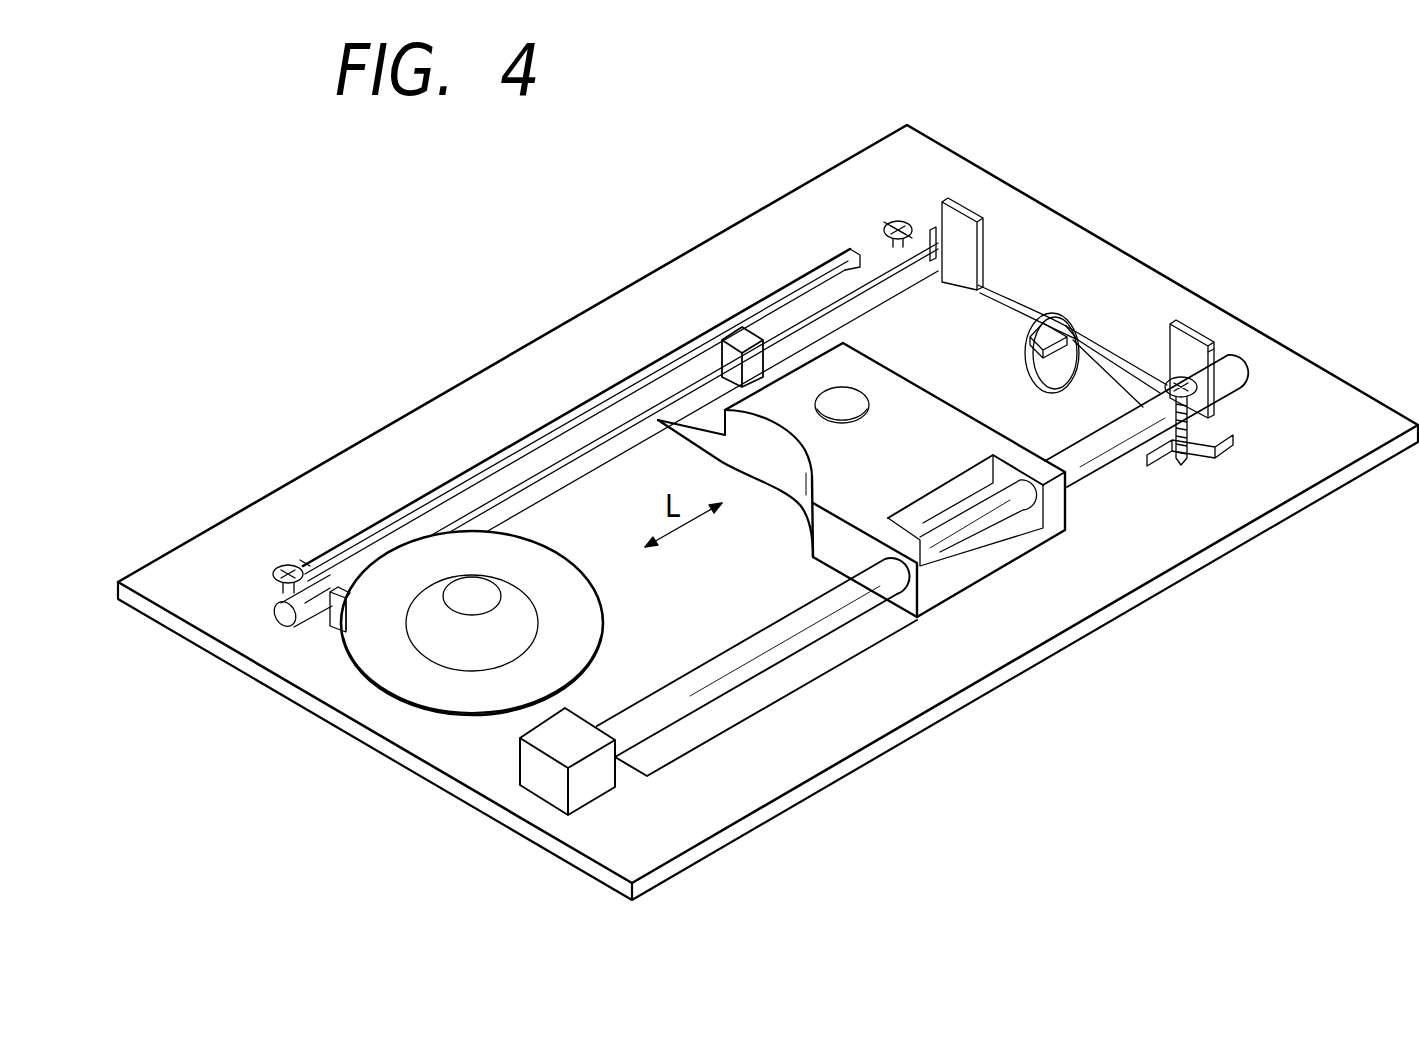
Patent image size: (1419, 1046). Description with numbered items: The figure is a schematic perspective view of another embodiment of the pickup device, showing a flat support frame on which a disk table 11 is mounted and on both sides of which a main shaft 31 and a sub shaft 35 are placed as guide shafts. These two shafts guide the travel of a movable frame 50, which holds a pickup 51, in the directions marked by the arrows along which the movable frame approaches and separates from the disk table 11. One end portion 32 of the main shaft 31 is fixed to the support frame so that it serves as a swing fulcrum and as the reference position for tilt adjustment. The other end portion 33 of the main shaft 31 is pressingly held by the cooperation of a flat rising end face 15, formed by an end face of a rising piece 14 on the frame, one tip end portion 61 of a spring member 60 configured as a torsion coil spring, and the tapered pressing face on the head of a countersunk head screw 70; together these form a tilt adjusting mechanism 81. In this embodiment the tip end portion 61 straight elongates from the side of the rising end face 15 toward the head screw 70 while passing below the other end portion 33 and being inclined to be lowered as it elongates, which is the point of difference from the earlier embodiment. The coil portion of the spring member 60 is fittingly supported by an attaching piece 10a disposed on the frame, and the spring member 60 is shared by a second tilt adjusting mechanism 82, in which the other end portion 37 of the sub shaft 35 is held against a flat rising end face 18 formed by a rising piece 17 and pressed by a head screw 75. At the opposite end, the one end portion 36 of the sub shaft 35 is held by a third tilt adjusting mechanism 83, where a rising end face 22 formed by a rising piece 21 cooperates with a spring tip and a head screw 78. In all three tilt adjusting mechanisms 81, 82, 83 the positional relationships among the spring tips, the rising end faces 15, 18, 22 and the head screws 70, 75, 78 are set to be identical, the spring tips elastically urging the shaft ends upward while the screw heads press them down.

The attaching piece 10a is at (1028, 345).
The disk table 11 is at (543, 577).
The rising piece 14 is at (1196, 336).
The rising end face 15 is at (1217, 356).
The rising piece 17 is at (958, 215).
The rising end face 18 is at (1082, 296).
The rising piece 21 is at (335, 606).
The rising end face 22 is at (303, 560).
The main shaft 31 is at (813, 633).
The one end portion 32 is at (677, 692).
The other end portion 33 is at (1240, 370).
The sub shaft 35 is at (578, 418).
The one end portion 36 is at (308, 603).
The other end portion 37 is at (928, 222).
The movable frame 50 is at (795, 475).
The pickup 51 is at (843, 400).
The spring member 60 is at (1085, 306).
The tip end portion 61 is at (1117, 380).
The head screw 70 is at (1200, 473).
The head screw 75 is at (878, 221).
The head screw 78 is at (270, 552).
The tilt adjusting mechanism 81 is at (1240, 455).
The tilt adjusting mechanism 82 is at (888, 208).
The tilt adjusting mechanism 83 is at (272, 620).